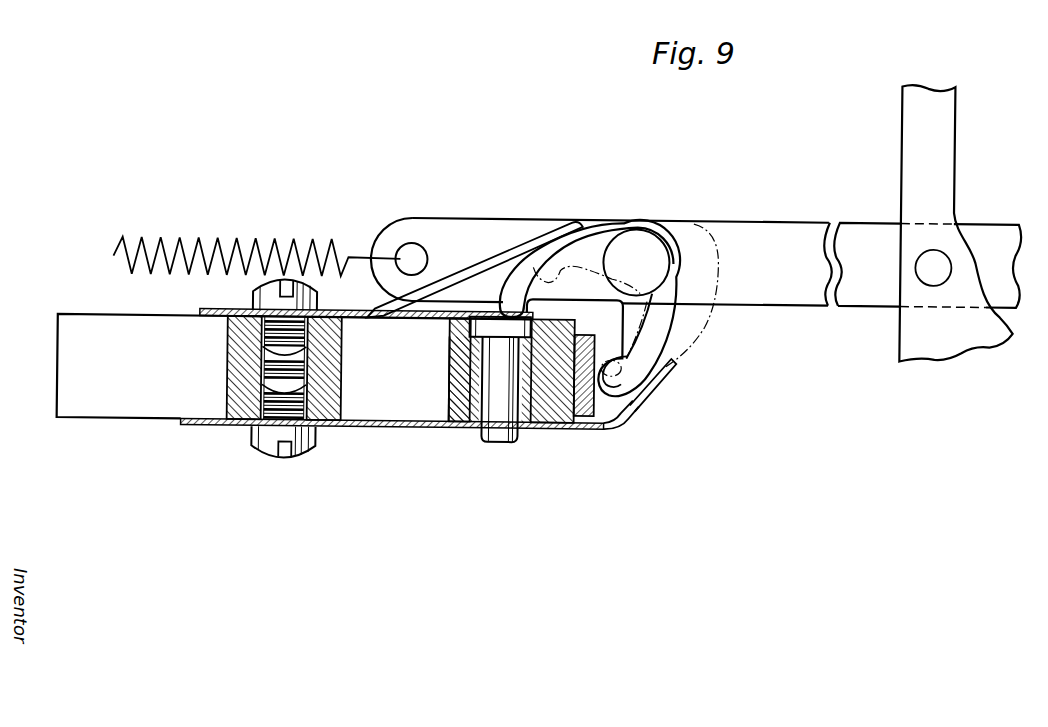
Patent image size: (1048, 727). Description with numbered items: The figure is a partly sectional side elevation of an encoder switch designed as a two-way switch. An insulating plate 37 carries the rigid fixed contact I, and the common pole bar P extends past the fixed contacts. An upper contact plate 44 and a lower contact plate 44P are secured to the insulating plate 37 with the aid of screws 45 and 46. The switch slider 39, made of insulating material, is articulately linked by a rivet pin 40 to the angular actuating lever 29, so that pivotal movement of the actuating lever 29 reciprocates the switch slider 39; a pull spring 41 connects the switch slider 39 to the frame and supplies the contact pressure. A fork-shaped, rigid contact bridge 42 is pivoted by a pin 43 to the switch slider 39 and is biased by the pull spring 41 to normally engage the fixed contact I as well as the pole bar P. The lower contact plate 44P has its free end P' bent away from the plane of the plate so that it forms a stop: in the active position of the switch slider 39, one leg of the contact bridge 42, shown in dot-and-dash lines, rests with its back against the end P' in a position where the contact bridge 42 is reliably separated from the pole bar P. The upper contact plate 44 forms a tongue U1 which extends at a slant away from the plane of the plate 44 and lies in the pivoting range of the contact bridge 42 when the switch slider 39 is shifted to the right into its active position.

The actuating lever 29 is at (920, 164).
The insulating plate 37 is at (331, 435).
The switch slider 39 is at (768, 231).
The rivet pin 40 is at (925, 267).
The pull spring 41 is at (278, 243).
The contact bridge 42 is at (660, 315).
The pin 43 is at (630, 242).
The upper contact plate 44 is at (342, 316).
The lower contact plate 44P is at (553, 431).
The screw 45 is at (250, 445).
The screw 46 is at (262, 302).
The fixed contact I is at (493, 434).
The tongue U1 is at (503, 257).
The pole bar P is at (620, 436).
The free end P' is at (673, 387).